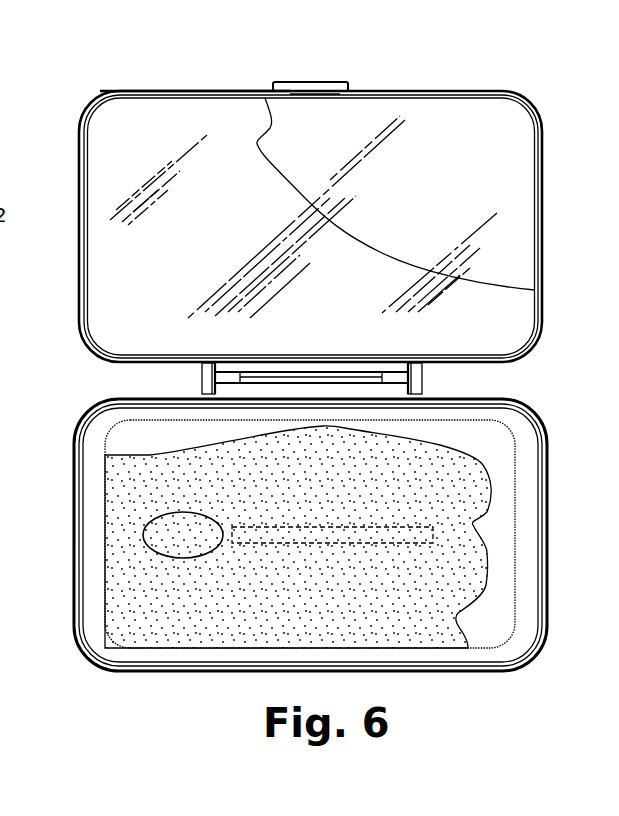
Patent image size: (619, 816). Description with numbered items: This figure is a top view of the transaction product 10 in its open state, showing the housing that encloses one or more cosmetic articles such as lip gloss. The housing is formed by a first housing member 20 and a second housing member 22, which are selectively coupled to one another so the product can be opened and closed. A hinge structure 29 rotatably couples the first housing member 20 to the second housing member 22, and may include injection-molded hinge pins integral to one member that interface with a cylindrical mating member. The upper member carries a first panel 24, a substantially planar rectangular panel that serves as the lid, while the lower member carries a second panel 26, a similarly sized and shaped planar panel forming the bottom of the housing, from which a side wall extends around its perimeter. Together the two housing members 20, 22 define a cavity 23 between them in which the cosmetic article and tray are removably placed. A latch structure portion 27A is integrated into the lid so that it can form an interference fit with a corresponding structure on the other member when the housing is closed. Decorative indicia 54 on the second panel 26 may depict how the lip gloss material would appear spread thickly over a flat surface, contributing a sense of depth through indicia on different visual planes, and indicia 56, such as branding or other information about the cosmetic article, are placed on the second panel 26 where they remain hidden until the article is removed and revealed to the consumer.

The transaction product 10 is at (553, 59).
The first housing member 20 is at (548, 525).
The second housing member 22 is at (543, 184).
The cavity 23 is at (128, 445).
The first panel 24 is at (196, 90).
The second panel 26 is at (507, 620).
The latch structure portion 27A is at (310, 81).
The hinge structure 29 is at (400, 378).
The indicia 54 is at (485, 458).
The indicia 56 is at (133, 520).